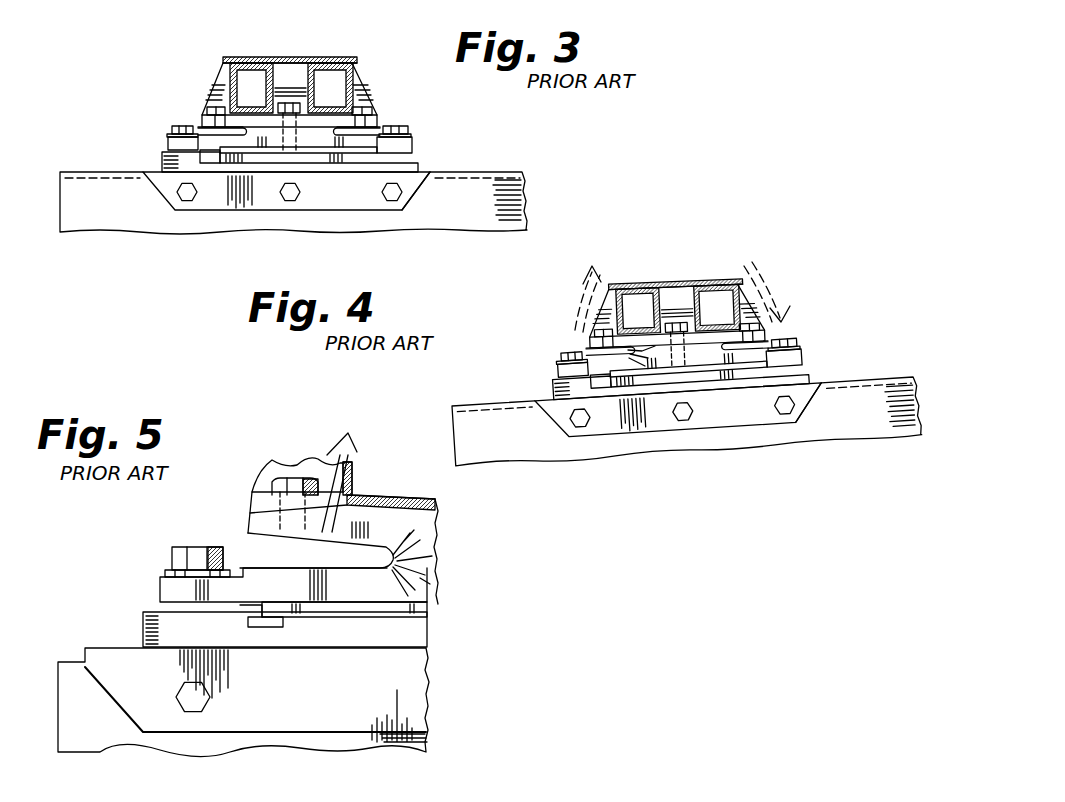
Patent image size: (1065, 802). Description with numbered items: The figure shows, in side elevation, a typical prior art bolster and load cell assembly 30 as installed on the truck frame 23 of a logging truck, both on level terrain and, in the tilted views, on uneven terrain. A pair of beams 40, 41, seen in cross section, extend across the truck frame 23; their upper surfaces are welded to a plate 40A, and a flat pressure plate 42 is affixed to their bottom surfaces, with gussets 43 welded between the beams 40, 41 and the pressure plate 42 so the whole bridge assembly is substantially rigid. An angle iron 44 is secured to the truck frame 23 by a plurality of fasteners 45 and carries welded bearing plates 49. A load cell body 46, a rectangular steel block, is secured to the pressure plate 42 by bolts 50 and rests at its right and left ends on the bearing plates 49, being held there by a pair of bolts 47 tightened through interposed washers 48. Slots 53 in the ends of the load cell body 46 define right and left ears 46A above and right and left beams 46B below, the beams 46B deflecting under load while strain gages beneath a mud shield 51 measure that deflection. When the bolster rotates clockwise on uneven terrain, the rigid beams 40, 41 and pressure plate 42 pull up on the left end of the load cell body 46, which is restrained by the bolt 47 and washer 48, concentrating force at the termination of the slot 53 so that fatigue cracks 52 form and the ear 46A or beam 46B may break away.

In FIG. 3, the truck frame 23 is at (522, 173).
In FIG. 4, the truck frame 23 is at (912, 378).
In FIG. 5, the truck frame 23 is at (70, 665).
In FIG. 3, the bolster and load cell assembly 30 is at (140, 127).
In FIG. 4, the bolster and load cell assembly 30 is at (503, 367).
In FIG. 5, the bolster and load cell assembly 30 is at (106, 536).
In FIG. 3, the beam 40 is at (258, 59).
In FIG. 4, the beam 40 is at (645, 284).
In FIG. 5, the beam 40 is at (352, 475).
In FIG. 3, the plate 40A is at (318, 58).
In FIG. 4, the plate 40A is at (704, 281).
In FIG. 3, the beam 41 is at (344, 58).
In FIG. 4, the beam 41 is at (728, 279).
In FIG. 3, the pressure plate 42 is at (375, 118).
In FIG. 4, the pressure plate 42 is at (677, 335).
In FIG. 3, the gusset 43 is at (215, 80).
In FIG. 4, the gusset 43 is at (604, 304).
In FIG. 3, the angle iron 44 is at (422, 186).
In FIG. 4, the angle iron 44 is at (817, 395).
In FIG. 3, the fastener 45 is at (290, 203).
In FIG. 4, the fastener 45 is at (684, 423).
In FIG. 5, the fastener 45 is at (203, 705).
In FIG. 3, the load cell body 46 is at (162, 152).
In FIG. 4, the load cell body 46 is at (555, 379).
In FIG. 5, the load cell body 46 is at (160, 589).
In FIG. 3, the ear 46A is at (198, 128).
In FIG. 4, the ear 46A is at (589, 349).
In FIG. 5, the ear 46A is at (355, 520).
In FIG. 3, the beam 46B is at (222, 160).
In FIG. 4, the beam 46B is at (613, 384).
In FIG. 5, the beam 46B is at (318, 600).
In FIG. 3, the bolt 47 is at (180, 126).
In FIG. 4, the bolt 47 is at (569, 353).
In FIG. 5, the bolt 47 is at (193, 548).
In FIG. 3, the washer 48 is at (167, 137).
In FIG. 4, the washer 48 is at (678, 355).
In FIG. 5, the washer 48 is at (166, 573).
In FIG. 3, the bearing plate 49 is at (160, 160).
In FIG. 4, the bearing plate 49 is at (811, 375).
In FIG. 5, the bearing plate 49 is at (143, 626).
In FIG. 3, the bolt 50 is at (288, 103).
In FIG. 4, the bolt 50 is at (675, 323).
In FIG. 5, the bolt 50 is at (292, 478).
In FIG. 3, the mud shield 51 is at (320, 154).
In FIG. 4, the mud shield 51 is at (710, 374).
In FIG. 5, the crack 52 is at (420, 563).
In FIG. 3, the slot 53 is at (245, 133).
In FIG. 4, the slot 53 is at (677, 349).
In FIG. 5, the slot 53 is at (375, 560).